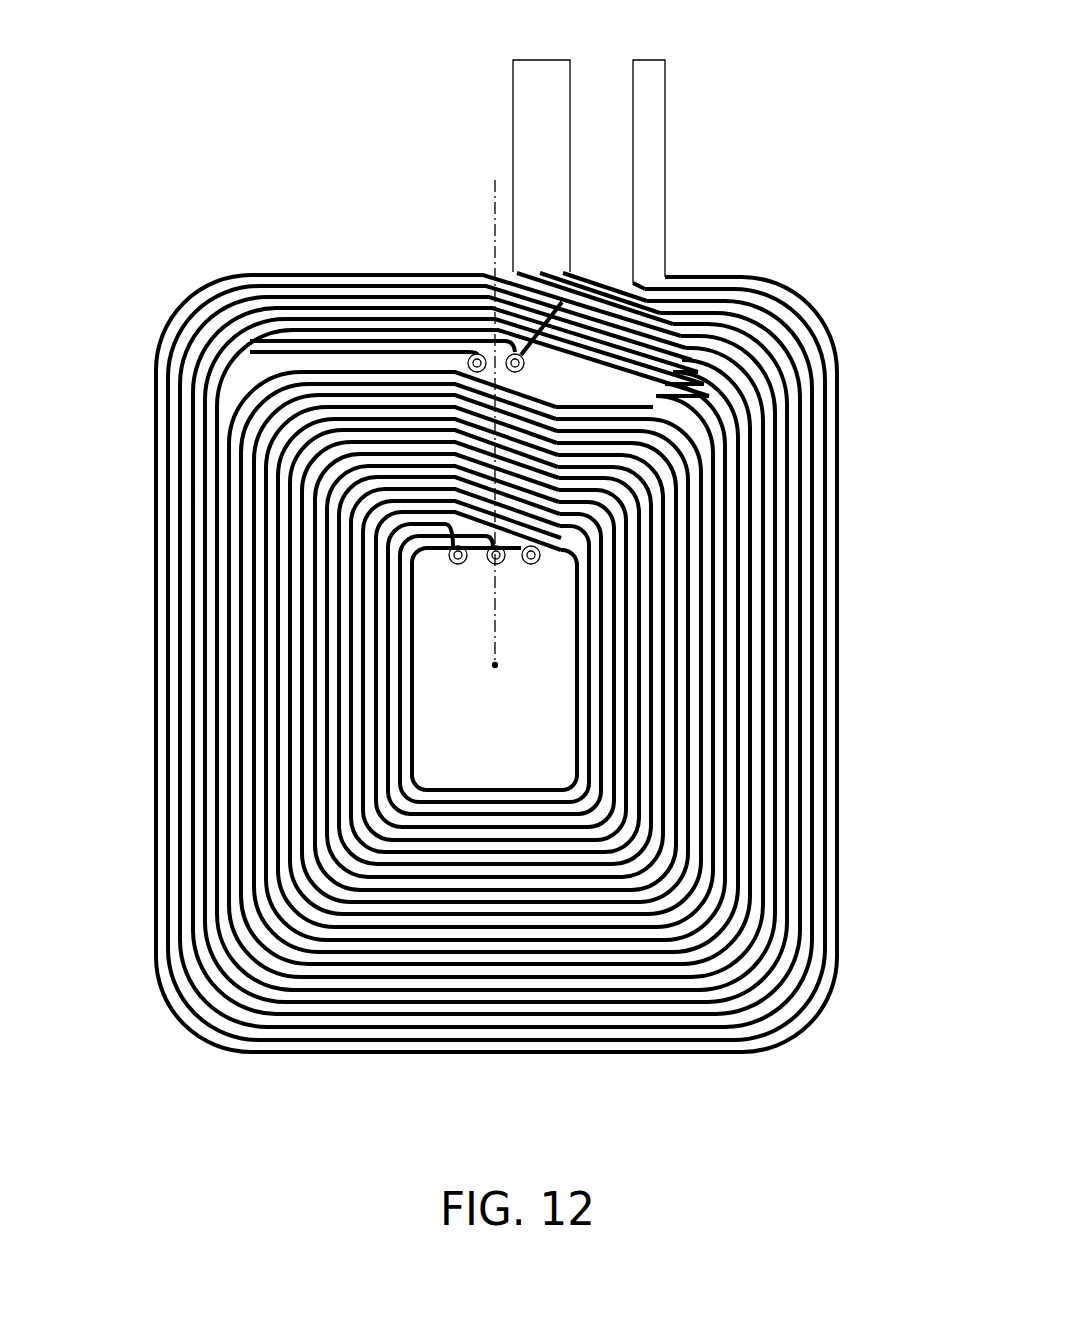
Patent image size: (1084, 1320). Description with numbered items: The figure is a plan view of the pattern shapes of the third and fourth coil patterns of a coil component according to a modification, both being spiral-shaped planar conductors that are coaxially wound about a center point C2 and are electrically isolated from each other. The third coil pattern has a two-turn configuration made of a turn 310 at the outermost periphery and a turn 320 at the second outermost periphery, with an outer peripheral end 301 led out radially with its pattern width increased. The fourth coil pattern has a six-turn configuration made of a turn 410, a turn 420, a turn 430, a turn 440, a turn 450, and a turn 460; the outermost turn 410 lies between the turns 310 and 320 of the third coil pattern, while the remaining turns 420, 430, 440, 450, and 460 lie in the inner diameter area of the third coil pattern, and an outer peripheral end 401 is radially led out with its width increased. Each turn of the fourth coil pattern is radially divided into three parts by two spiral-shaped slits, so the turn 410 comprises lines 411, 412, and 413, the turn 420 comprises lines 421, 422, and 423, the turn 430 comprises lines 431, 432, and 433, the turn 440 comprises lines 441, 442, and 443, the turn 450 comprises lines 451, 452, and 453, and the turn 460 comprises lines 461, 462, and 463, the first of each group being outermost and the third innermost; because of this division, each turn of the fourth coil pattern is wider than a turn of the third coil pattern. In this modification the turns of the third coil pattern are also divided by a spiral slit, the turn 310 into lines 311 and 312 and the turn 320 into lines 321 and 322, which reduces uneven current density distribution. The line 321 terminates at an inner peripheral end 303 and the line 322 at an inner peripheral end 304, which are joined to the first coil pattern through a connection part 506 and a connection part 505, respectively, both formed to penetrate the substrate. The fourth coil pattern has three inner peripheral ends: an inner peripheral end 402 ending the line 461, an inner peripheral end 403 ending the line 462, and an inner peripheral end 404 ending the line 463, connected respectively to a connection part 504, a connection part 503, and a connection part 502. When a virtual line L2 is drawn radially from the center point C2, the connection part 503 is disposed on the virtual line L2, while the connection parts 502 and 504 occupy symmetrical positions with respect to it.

The outer peripheral end 401 is at (541, 72).
The outer peripheral end 301 is at (644, 72).
The virtual line L2 is at (495, 195).
The center point C2 is at (497, 665).
The turn 410 is at (552, 660).
The line 411 is at (770, 318).
The line 412 is at (780, 332).
The line 413 is at (790, 358).
The turn 310 is at (571, 661).
The line 311 is at (822, 398).
The line 312 is at (830, 405).
The turn 320 is at (583, 660).
The line 321 is at (775, 455).
The line 322 is at (762, 492).
The turn 420 is at (595, 662).
The line 421 is at (755, 540).
The line 422 is at (743, 567).
The line 423 is at (730, 600).
The turn 430 is at (613, 661).
The line 431 is at (705, 640).
The line 432 is at (692, 675).
The line 433 is at (680, 705).
The turn 440 is at (632, 666).
The line 441 is at (670, 745).
The line 442 is at (658, 775).
The line 443 is at (640, 800).
The turn 450 is at (343, 665).
The line 451 is at (355, 690).
The line 452 is at (365, 720).
The line 453 is at (375, 755).
The turn 460 is at (324, 664).
The line 461 is at (400, 583).
The line 462 is at (405, 607).
The line 463 is at (410, 640).
The inner peripheral end 304 is at (471, 355).
The connection part 505 is at (477, 353).
The inner peripheral end 303 is at (524, 370).
The connection part 506 is at (518, 353).
The inner peripheral end 404 is at (460, 565).
The connection part 502 is at (454, 564).
The inner peripheral end 403 is at (492, 565).
The connection part 503 is at (500, 565).
The inner peripheral end 402 is at (532, 565).
The connection part 504 is at (535, 564).